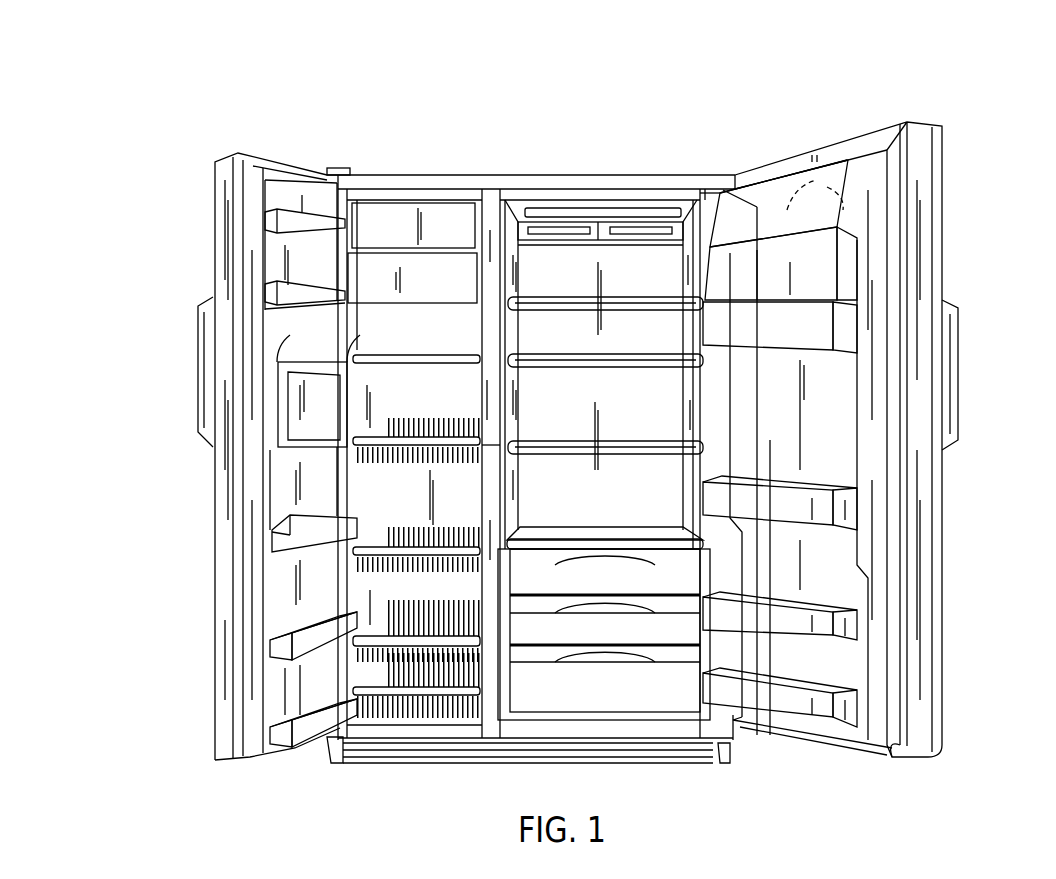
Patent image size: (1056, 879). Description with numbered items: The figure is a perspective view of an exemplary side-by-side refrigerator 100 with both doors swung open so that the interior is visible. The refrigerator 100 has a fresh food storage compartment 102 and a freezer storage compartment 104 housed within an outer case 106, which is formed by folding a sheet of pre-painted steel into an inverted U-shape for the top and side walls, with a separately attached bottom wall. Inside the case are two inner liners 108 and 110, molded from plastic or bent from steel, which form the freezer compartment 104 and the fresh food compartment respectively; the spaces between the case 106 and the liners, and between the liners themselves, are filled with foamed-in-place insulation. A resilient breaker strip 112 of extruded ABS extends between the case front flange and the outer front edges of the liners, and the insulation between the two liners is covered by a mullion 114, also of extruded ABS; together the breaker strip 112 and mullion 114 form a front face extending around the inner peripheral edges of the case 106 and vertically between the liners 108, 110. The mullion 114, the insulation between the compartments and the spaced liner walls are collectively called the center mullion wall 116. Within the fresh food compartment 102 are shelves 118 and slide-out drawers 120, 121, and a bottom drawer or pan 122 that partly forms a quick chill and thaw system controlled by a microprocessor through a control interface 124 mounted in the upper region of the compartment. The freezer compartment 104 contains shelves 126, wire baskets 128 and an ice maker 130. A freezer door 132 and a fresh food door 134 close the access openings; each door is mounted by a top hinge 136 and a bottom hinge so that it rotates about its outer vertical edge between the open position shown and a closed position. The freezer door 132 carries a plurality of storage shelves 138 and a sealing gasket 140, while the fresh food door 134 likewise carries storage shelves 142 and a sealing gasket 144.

The refrigerator 100 is at (682, 50).
The fresh food storage compartment 102 is at (687, 205).
The freezer storage compartment 104 is at (449, 220).
The outer case 106 is at (577, 172).
The inner liner 108 is at (633, 203).
The inner liner 110 is at (377, 203).
The breaker strip 112 is at (668, 180).
The mullion 114 is at (490, 448).
The center mullion wall 116 is at (512, 398).
The shelves 118 is at (533, 308).
The slide-out drawer 120 is at (586, 592).
The slide-out drawer 121 is at (585, 642).
The bottom drawer or pan 122 is at (585, 702).
The control interface 124 is at (543, 208).
The shelves 126 is at (414, 364).
The wire baskets 128 is at (410, 467).
The ice maker 130 is at (413, 283).
The freezer door 132 is at (208, 697).
The fresh food door 134 is at (953, 187).
The top hinge 136 is at (338, 168).
The storage shelves 138 is at (278, 737).
The sealing gasket 140 is at (250, 160).
The storage shelves 142 is at (787, 350).
The sealing gasket 144 is at (873, 143).